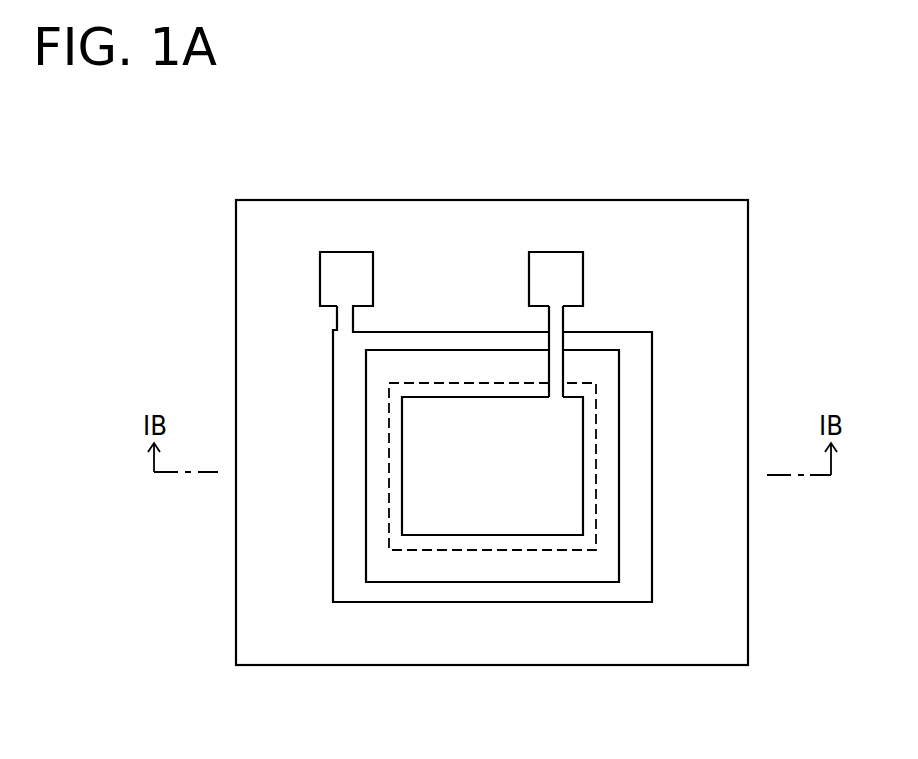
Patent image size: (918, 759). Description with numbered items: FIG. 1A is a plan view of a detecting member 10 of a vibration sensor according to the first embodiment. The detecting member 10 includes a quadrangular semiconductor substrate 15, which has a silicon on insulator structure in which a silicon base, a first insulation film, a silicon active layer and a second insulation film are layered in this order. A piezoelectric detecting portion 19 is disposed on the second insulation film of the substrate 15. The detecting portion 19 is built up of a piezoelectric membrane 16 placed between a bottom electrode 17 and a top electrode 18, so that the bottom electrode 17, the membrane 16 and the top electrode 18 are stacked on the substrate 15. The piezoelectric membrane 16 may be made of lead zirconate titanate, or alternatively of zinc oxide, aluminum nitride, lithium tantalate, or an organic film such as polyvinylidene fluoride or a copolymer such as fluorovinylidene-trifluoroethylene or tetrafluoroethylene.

The detecting member 10 is at (713, 170).
The semiconductor substrate 15 is at (727, 574).
The piezoelectric membrane 16 is at (542, 569).
The bottom electrode 17 is at (460, 342).
The top electrode 18 is at (553, 446).
The piezoelectric detecting portion 19 is at (402, 602).